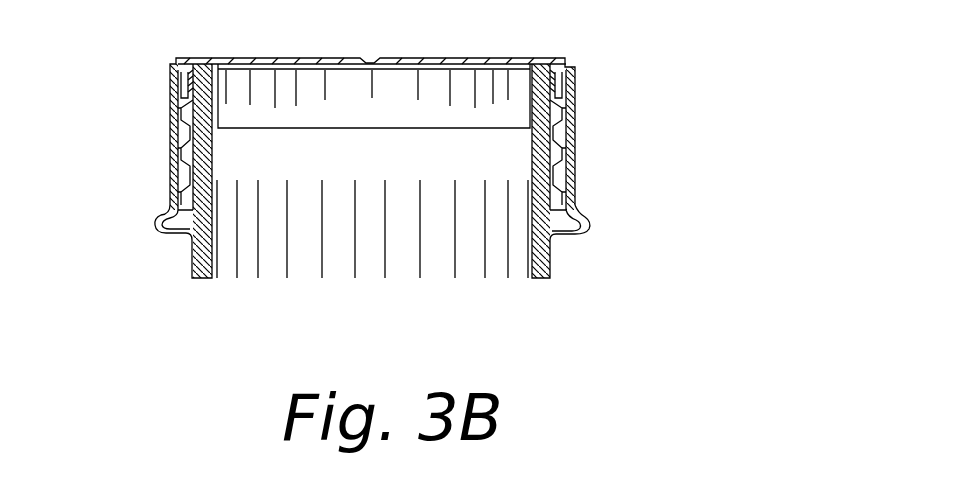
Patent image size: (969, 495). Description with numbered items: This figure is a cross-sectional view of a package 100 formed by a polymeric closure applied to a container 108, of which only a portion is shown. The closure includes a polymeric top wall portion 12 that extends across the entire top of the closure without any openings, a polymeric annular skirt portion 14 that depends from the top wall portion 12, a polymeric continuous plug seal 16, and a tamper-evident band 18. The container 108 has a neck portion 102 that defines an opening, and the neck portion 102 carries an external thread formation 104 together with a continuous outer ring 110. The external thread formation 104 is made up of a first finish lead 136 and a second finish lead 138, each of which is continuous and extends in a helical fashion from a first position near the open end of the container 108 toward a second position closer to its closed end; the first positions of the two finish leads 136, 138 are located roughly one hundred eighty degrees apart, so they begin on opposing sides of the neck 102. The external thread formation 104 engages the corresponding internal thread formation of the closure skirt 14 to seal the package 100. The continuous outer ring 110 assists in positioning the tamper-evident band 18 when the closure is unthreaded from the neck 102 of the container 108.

The package 100 is at (718, 125).
The polymeric top wall portion 12 is at (413, 45).
The polymeric annular skirt portion 14 is at (594, 101).
The polymeric continuous plug seal 16 is at (229, 126).
The tamper-evident band 18 is at (594, 217).
The neck portion 102 is at (560, 141).
The external thread formation 104 is at (203, 176).
The container 108 is at (168, 286).
The continuous outer ring 110 is at (592, 243).
The first finish lead 136 is at (177, 131).
The second finish lead 138 is at (183, 93).